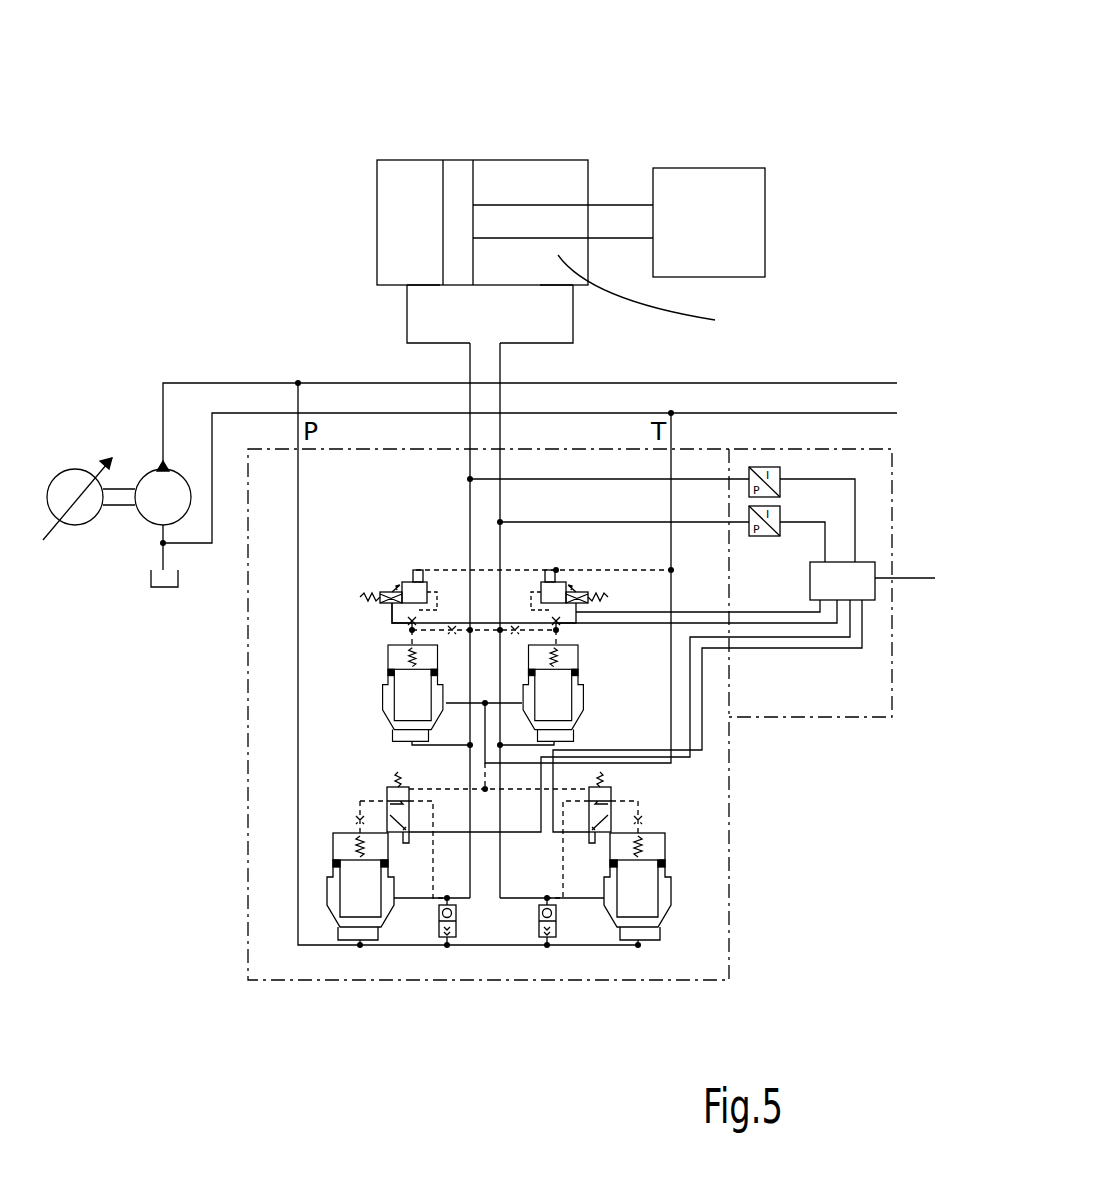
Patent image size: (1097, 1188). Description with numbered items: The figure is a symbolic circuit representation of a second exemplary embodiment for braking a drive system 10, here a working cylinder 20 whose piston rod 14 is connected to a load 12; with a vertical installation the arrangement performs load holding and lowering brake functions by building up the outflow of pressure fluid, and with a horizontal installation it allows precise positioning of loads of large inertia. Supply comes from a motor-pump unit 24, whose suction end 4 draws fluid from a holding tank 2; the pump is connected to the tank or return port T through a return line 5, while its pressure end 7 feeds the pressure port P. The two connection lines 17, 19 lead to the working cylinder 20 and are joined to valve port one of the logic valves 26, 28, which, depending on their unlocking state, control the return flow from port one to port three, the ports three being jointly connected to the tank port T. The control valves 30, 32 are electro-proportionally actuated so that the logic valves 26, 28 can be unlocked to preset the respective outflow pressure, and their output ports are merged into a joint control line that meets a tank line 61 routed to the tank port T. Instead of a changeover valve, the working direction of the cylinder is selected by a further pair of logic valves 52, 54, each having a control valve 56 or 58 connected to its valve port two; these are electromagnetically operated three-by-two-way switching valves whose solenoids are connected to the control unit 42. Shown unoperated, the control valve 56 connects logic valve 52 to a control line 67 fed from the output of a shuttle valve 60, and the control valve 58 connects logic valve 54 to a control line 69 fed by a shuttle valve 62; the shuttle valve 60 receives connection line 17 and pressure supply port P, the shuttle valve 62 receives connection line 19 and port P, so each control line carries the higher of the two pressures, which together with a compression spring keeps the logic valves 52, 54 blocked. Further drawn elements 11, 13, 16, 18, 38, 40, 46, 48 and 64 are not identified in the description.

The drive system 10 is at (556, 158).
The working cylinder 20 is at (420, 160).
The first cylinder chamber 16 is at (398, 218).
The piston rod 14 is at (555, 220).
The load 12 is at (720, 190).
The second cylinder chamber 18 is at (653, 294).
The first working port 11 is at (407, 285).
The second working port 13 is at (572, 285).
The first working line 46 is at (405, 308).
The second working line 48 is at (549, 345).
The connection line 17 is at (467, 515).
The connection line 19 is at (503, 500).
The pressure end 7 is at (160, 470).
The motor-pump unit 24 is at (115, 508).
The suction end 4 is at (163, 525).
The holding tank 2 is at (163, 590).
The return line 5 is at (212, 500).
The first pressure sensor 38 is at (786, 470).
The second pressure sensor 40 is at (786, 512).
The control unit 42 is at (858, 592).
The control lines 64 is at (670, 680).
The tank line 61 is at (673, 585).
The control valve 30 is at (420, 580).
The control valve 32 is at (558, 585).
The logic valve 26 is at (400, 690).
The logic valve 28 is at (553, 690).
The logic valve 52 is at (360, 893).
The logic valve 54 is at (668, 890).
The control valve 56 is at (387, 784).
The control valve 58 is at (640, 785).
The control line 67 is at (437, 858).
The control line 69 is at (580, 850).
The shuttle valve 60 is at (465, 925).
The shuttle valve 62 is at (560, 925).